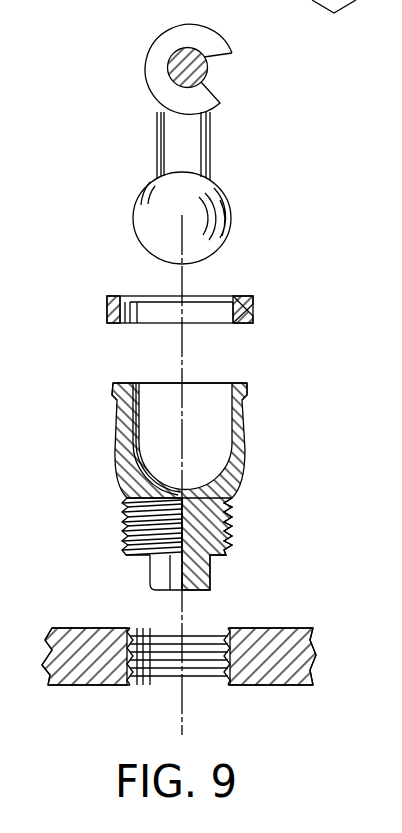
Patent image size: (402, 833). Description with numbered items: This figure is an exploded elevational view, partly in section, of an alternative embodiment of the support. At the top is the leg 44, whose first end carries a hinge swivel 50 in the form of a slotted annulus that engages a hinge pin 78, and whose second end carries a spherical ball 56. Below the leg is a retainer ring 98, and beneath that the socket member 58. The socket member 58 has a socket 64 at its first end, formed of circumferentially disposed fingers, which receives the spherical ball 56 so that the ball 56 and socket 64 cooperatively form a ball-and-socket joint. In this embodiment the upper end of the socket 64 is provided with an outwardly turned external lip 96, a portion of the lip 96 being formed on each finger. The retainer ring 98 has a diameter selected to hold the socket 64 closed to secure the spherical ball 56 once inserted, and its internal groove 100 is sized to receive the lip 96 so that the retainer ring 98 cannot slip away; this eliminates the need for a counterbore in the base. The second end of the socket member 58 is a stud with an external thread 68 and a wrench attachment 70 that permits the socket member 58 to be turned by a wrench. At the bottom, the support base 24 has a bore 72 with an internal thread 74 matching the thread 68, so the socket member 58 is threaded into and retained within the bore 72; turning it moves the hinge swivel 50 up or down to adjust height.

The support base 24 is at (68, 633).
The leg 44 is at (205, 142).
The hinge swivel 50 is at (158, 47).
The spherical ball 56 is at (220, 213).
The socket member 58 is at (230, 497).
The socket 64 is at (247, 440).
The thread 68 is at (127, 513).
The wrench attachment 70 is at (148, 573).
The bore 72 is at (140, 628).
The thread 74 is at (217, 670).
The pin 78 is at (200, 70).
The lip 96 is at (243, 387).
The retainer ring 98 is at (255, 320).
The internal groove 100 is at (255, 310).